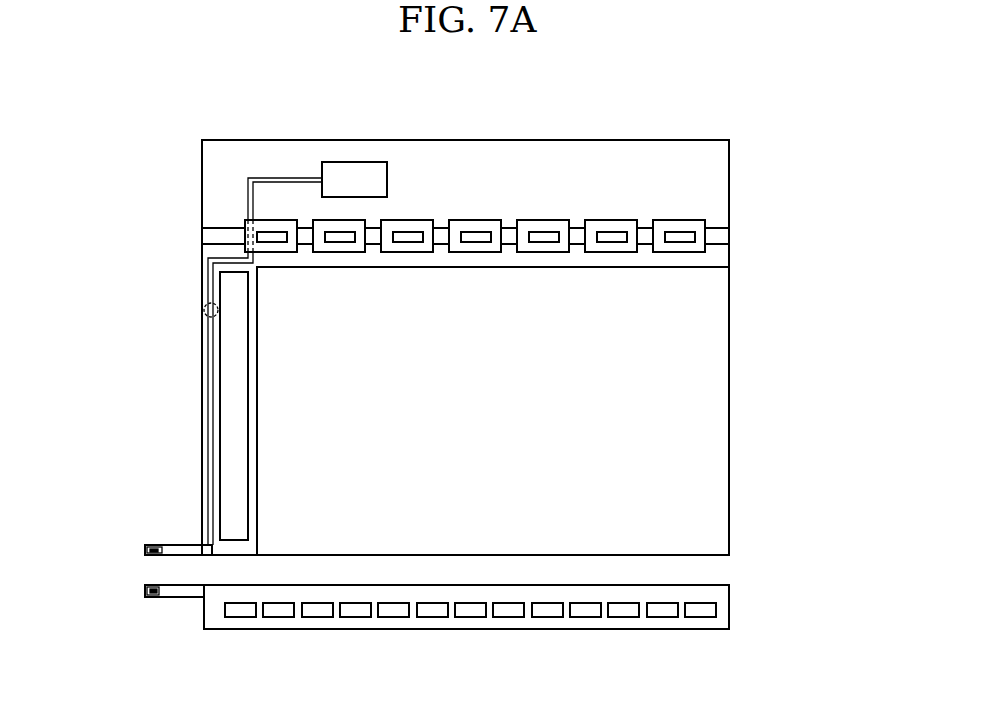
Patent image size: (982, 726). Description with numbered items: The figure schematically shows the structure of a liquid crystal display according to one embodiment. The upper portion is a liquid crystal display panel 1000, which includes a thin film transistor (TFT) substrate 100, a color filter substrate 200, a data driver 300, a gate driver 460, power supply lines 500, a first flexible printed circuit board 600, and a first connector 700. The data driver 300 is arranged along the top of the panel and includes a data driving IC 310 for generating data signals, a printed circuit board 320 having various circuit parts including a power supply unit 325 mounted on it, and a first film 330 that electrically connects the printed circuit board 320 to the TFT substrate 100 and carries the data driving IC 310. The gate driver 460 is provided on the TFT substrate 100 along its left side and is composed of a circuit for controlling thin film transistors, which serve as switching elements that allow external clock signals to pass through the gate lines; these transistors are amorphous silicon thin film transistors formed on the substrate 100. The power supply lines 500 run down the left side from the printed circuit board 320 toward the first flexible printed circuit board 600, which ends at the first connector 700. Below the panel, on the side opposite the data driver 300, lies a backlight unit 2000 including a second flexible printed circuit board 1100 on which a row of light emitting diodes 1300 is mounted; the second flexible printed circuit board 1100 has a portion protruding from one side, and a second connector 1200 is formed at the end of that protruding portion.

The thin film transistor (TFT) substrate 100 is at (720, 259).
The color filter substrate 200 is at (720, 333).
The data driver 300 is at (536, 173).
The data driving IC 310 is at (678, 230).
The printed circuit board 320 is at (718, 160).
The power supply unit 325 is at (355, 172).
The first film 330 is at (707, 237).
The gate driver 460 is at (233, 362).
The power supply lines 500 is at (190, 306).
The first flexible printed circuit board 600 is at (175, 547).
The first connector 700 is at (155, 555).
The liquid crystal display panel 1000 is at (472, 339).
The second flexible printed circuit board 1100 is at (254, 622).
The second connector 1200 is at (136, 603).
The light emitting diodes 1300 is at (355, 618).
The backlight unit 2000 is at (456, 641).